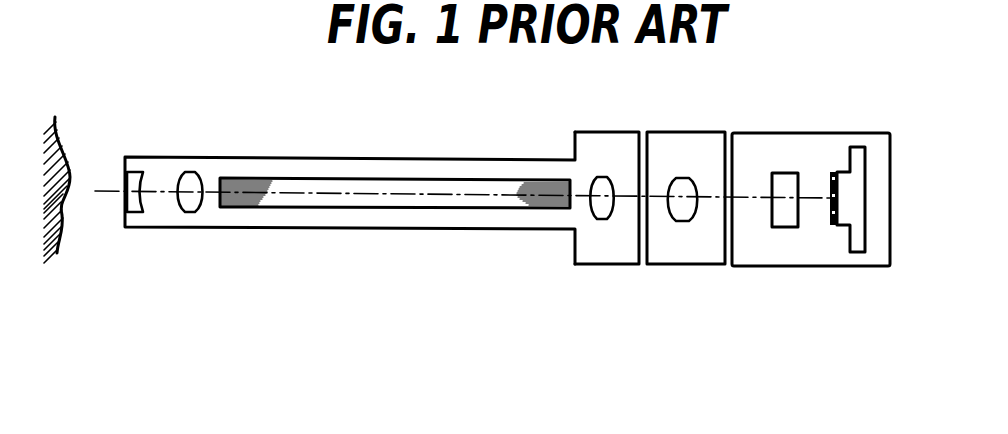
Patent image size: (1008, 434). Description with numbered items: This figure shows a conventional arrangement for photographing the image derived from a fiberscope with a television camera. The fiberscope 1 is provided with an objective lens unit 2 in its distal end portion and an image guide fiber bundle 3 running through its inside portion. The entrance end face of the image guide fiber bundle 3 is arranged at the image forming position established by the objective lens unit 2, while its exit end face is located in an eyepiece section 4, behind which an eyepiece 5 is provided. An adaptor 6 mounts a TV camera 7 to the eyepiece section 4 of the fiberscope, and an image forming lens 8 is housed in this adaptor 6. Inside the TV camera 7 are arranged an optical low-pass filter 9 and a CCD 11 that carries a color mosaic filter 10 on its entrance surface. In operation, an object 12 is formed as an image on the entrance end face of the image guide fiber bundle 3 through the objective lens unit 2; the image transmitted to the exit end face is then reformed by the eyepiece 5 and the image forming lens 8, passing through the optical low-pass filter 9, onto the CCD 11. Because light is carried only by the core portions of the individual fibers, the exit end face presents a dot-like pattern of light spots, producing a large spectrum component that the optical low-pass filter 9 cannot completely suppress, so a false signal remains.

The fiberscope 1 is at (325, 137).
The objective lens unit 2 is at (122, 232).
The image guide fiber bundle 3 is at (355, 200).
The eyepiece section 4 is at (612, 130).
The eyepiece 5 is at (600, 212).
The adaptor 6 is at (696, 118).
The TV camera 7 is at (797, 118).
The image forming lens 8 is at (678, 213).
The optical low-pass filter 9 is at (780, 220).
The color mosaic filter 10 is at (829, 223).
The CCD 11 is at (857, 245).
The object 12 is at (60, 243).